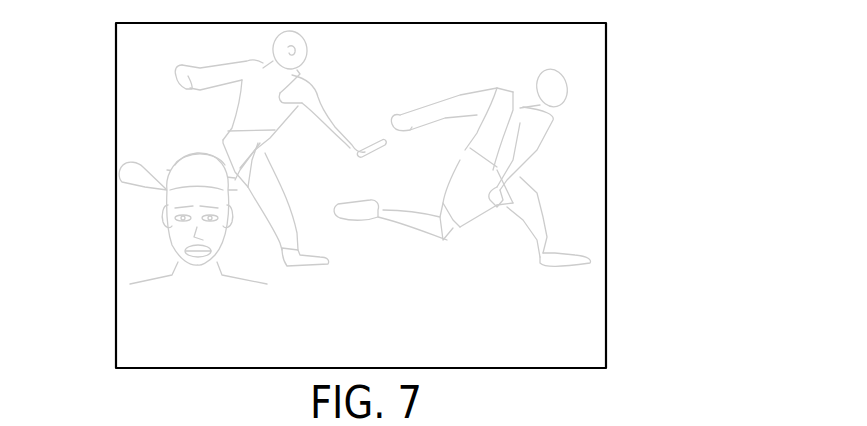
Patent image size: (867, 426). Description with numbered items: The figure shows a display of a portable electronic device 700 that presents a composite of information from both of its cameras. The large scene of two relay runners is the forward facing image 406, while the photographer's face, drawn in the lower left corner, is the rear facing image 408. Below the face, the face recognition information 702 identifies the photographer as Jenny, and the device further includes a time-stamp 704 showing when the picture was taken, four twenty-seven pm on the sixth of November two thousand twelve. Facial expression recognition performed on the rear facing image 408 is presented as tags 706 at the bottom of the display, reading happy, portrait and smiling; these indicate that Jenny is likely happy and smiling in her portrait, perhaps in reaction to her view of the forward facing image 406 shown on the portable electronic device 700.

The portable electronic device 700 is at (625, 51).
The forward facing image 406 is at (205, 107).
The rear facing image 408 is at (147, 213).
The face recognition information 702 is at (170, 279).
The time-stamp 704 is at (164, 321).
The tags 706 is at (490, 349).